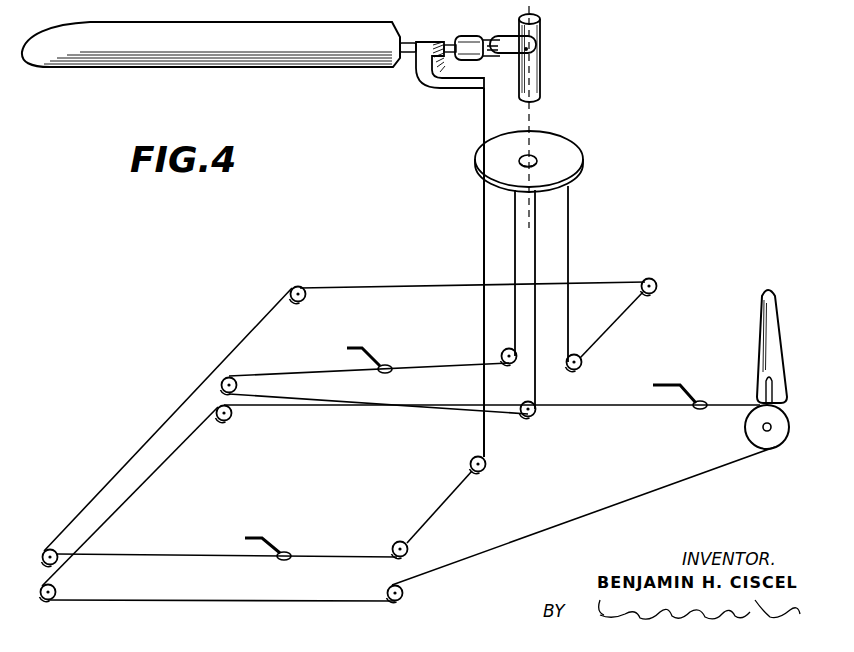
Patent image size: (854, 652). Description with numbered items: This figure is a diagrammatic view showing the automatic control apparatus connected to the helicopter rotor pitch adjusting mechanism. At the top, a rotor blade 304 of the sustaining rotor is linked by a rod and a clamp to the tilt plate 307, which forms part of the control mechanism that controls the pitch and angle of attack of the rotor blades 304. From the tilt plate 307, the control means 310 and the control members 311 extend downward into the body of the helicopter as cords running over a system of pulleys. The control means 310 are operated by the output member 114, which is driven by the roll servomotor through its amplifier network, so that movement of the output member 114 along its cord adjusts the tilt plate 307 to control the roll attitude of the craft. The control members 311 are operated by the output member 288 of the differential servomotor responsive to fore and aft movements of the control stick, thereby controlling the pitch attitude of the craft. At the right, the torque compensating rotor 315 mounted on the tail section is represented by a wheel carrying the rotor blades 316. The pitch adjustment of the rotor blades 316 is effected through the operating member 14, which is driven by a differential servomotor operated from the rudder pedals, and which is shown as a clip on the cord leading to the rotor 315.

The rotor blades 304 is at (238, 69).
The tilt plate 307 is at (585, 156).
The control means 310 is at (514, 252).
The control members 311 is at (484, 242).
The output member 114 is at (358, 348).
The operating member 14 is at (672, 383).
The output member 288 is at (268, 540).
The torque compensating rotor 315 is at (732, 359).
The rotor blades 316 is at (762, 331).